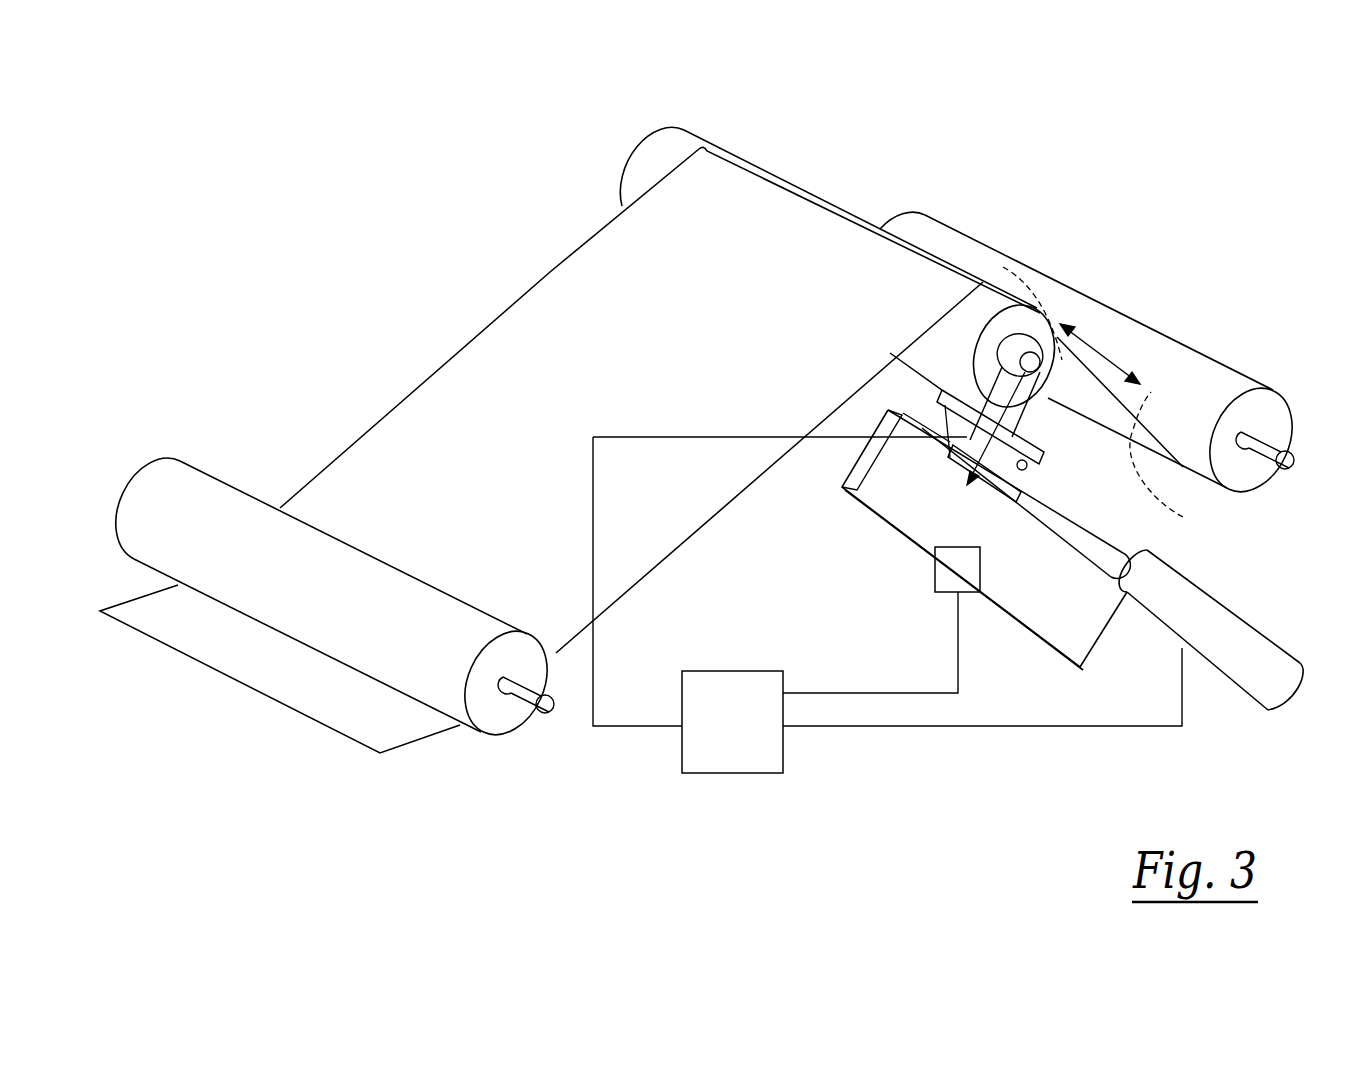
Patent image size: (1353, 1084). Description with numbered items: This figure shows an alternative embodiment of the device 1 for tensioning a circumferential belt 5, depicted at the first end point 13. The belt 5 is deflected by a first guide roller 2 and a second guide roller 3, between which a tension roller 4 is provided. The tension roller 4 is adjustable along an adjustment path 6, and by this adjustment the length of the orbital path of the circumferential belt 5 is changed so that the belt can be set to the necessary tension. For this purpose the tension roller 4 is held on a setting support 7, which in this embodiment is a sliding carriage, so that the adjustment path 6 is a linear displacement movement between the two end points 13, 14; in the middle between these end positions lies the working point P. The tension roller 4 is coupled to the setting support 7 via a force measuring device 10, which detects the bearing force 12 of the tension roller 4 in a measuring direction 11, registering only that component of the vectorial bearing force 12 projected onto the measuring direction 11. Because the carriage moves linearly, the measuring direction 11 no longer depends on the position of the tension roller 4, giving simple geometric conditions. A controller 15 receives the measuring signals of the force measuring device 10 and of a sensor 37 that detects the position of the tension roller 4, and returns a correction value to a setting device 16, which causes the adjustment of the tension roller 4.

The device 1 is at (468, 205).
The first guide roller 2 is at (483, 715).
The second guide roller 3 is at (905, 233).
The tension roller 4 is at (635, 185).
The circumferential belt 5 is at (493, 343).
The adjustment path 6 is at (1088, 340).
The working point P is at (1100, 352).
The setting support 7 is at (883, 505).
The force measuring device 10 is at (957, 427).
The measuring direction 11 is at (988, 399).
The bearing force 12 is at (1043, 413).
The end point 13 is at (1003, 267).
The end point 14 is at (1091, 452).
The controller 15 is at (703, 757).
The setting device 16 is at (1227, 652).
The sensor 37 is at (970, 580).